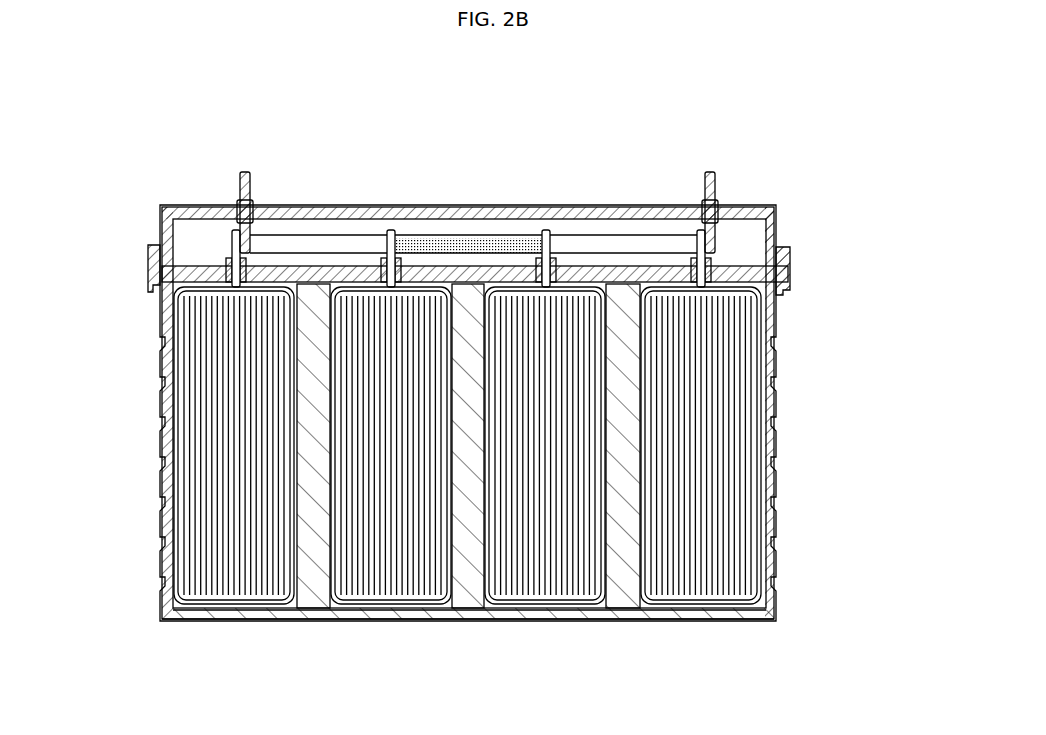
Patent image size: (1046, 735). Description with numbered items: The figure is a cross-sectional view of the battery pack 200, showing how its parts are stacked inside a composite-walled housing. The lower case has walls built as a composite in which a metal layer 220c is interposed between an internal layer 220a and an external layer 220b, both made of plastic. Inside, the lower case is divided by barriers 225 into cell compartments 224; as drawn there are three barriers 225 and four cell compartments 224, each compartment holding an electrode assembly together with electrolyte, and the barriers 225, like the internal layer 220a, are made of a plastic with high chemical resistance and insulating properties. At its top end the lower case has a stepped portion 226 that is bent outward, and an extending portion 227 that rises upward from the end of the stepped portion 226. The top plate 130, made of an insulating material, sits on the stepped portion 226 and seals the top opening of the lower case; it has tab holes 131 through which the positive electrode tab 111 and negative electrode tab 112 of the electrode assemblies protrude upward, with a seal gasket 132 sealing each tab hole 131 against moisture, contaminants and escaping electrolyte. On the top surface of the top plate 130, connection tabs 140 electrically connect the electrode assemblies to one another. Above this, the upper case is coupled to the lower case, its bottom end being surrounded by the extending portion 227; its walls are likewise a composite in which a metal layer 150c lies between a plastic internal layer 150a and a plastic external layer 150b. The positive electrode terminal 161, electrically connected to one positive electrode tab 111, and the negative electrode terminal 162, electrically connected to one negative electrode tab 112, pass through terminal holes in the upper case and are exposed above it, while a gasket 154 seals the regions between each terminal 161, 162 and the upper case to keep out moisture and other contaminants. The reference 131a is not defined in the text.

The battery pack 200 is at (897, 146).
The positive electrode tab 111 is at (227, 240).
The negative electrode tab 112 is at (697, 247).
The top plate 130 is at (722, 288).
The tab hole 131 is at (321, 272).
The connection post 131a is at (537, 273).
The seal gasket 132 is at (552, 268).
The connection tab 140 is at (416, 243).
The internal layer 150a is at (147, 262).
The external layer 150b is at (776, 222).
The metal layer 150c is at (768, 215).
The gasket 154 is at (697, 232).
The positive electrode terminal 161 is at (245, 171).
The negative electrode terminal 162 is at (710, 171).
The internal layer 220a is at (755, 621).
The external layer 220b is at (707, 621).
The metal layer 220c is at (778, 375).
The cell compartment 224 is at (287, 604).
The barrier 225 is at (468, 575).
The stepped portion 226 is at (776, 295).
The extending portion 227 is at (790, 268).